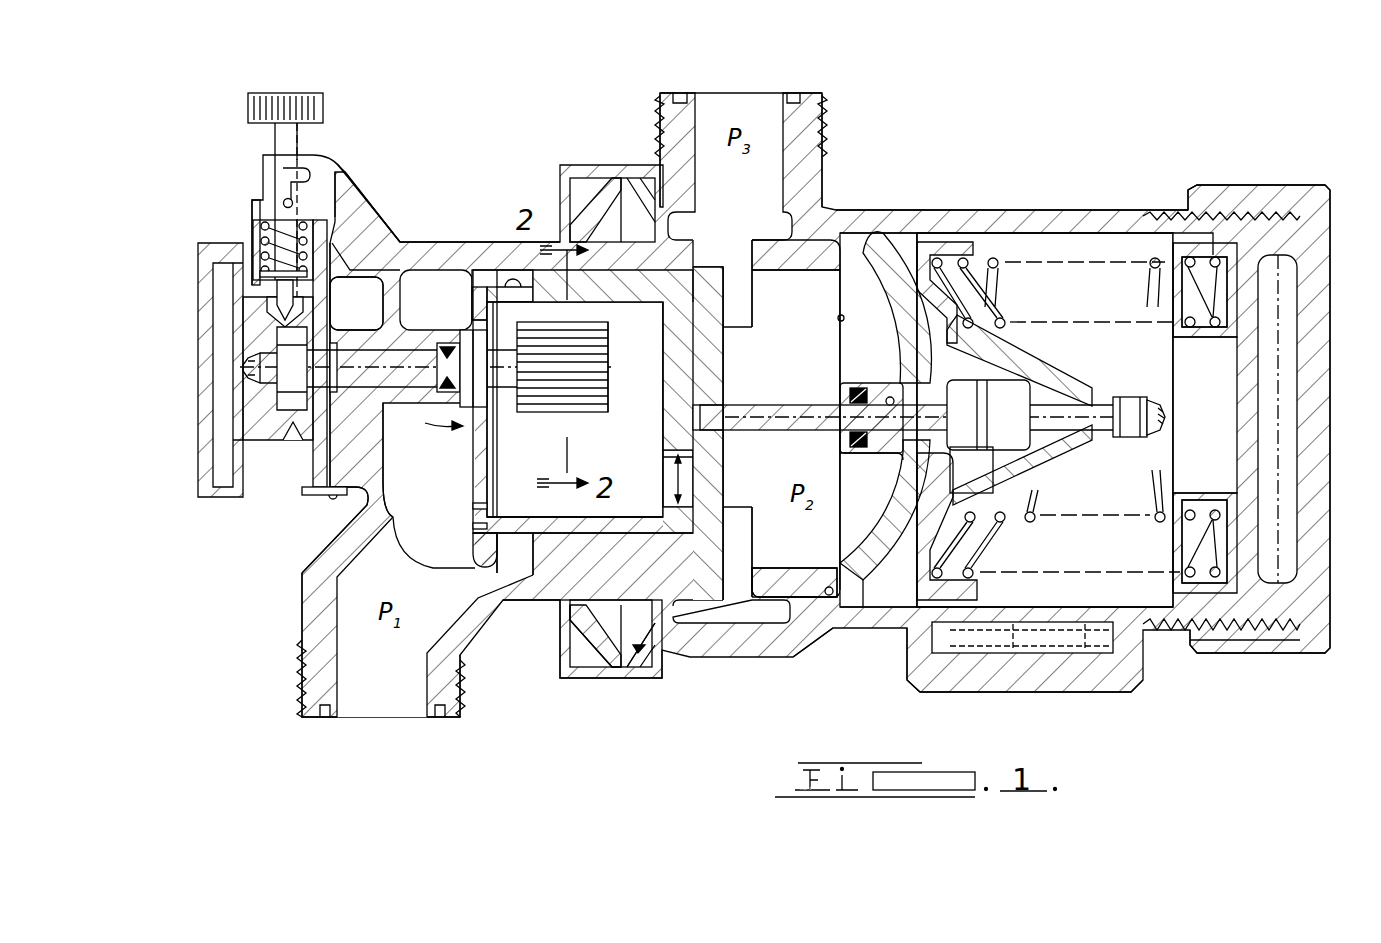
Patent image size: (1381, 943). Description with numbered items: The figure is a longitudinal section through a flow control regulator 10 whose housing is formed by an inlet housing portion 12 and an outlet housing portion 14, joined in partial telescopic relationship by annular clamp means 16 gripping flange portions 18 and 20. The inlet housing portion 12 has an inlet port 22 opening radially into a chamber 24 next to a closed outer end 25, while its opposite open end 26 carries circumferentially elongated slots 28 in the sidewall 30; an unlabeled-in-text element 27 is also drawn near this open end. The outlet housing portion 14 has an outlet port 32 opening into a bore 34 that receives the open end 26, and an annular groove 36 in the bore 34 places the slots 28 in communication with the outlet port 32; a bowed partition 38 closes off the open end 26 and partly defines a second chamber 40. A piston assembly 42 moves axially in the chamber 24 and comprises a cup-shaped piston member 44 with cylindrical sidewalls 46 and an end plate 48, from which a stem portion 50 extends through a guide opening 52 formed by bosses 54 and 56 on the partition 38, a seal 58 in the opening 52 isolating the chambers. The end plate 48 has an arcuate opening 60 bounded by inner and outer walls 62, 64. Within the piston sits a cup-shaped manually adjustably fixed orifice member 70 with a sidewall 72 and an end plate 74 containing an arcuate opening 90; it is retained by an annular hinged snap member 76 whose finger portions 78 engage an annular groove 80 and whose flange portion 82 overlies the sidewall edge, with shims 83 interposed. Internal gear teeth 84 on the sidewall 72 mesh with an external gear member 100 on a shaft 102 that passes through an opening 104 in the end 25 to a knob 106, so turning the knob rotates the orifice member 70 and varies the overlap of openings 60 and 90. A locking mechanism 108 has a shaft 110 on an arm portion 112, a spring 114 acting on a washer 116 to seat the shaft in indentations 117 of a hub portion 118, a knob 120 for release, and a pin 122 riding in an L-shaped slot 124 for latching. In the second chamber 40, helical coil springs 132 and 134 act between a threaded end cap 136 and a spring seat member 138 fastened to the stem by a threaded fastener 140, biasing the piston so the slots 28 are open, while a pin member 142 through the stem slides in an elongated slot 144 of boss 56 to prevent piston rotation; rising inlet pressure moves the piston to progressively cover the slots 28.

The flow control regulator 10 is at (1042, 116).
The inlet housing portion 12 is at (430, 240).
The outlet housing portion 14 is at (945, 210).
The annular clamp means 16 is at (608, 678).
The flange portion 18 is at (580, 632).
The flange portion 20 is at (673, 637).
The inlet port 22 is at (368, 717).
The chamber 24 is at (430, 456).
The closed outer end 25 is at (363, 497).
The open end 26 is at (838, 317).
The seat insert 27 is at (810, 247).
The slots 28 is at (750, 300).
The sidewall 30 is at (787, 577).
The outlet port 32 is at (738, 92).
The bore 34 is at (830, 600).
The annular groove 36 is at (750, 617).
The partition 38 is at (873, 233).
The second chamber 40 is at (1082, 243).
The piston assembly 42 is at (430, 420).
The piston member 44 is at (733, 370).
The cylindrical sidewalls 46 is at (553, 548).
The end plate 48 is at (723, 352).
The stem portion 50 is at (803, 407).
The guide opening 52 is at (888, 398).
The boss 54 is at (883, 455).
The boss 56 is at (1017, 383).
The seal 58 is at (853, 438).
The opening 60 is at (710, 466).
The inner wall 62 is at (712, 412).
The outer wall 64 is at (693, 512).
The manually adjustably fixed orifice member 70 is at (513, 514).
The sidewall 72 is at (628, 525).
The end plate 74 is at (660, 438).
The annular hinged snap member 76 is at (476, 466).
The finger portions 78 is at (507, 563).
The annular groove 80 is at (527, 570).
The flange portion 82 is at (478, 528).
The shims 83 is at (478, 507).
The internal gear teeth 84 is at (640, 378).
The arcuate opening 90 is at (693, 457).
The external gear member 100 is at (537, 393).
The shaft 102 is at (413, 363).
The opening 104 is at (353, 347).
The knob 106 is at (225, 490).
The locking mechanism 108 is at (238, 163).
The shaft 110 is at (300, 128).
The arm portion 112 is at (338, 180).
The spring 114 is at (263, 240).
The flange or washer 116 is at (247, 300).
The indentations 117 is at (278, 318).
The hub portion 118 is at (303, 440).
The knob 120 is at (282, 92).
The pin 122 is at (282, 203).
The L-shaped slot 124 is at (283, 175).
The helical coil spring 132 is at (995, 257).
The helical coil spring 134 is at (1003, 323).
The threaded end cap 136 is at (1330, 337).
The spring seat member 138 is at (1060, 455).
The threaded fastener 140 is at (1127, 393).
The pin member 142 is at (983, 445).
The elongated slot 144 is at (1017, 462).